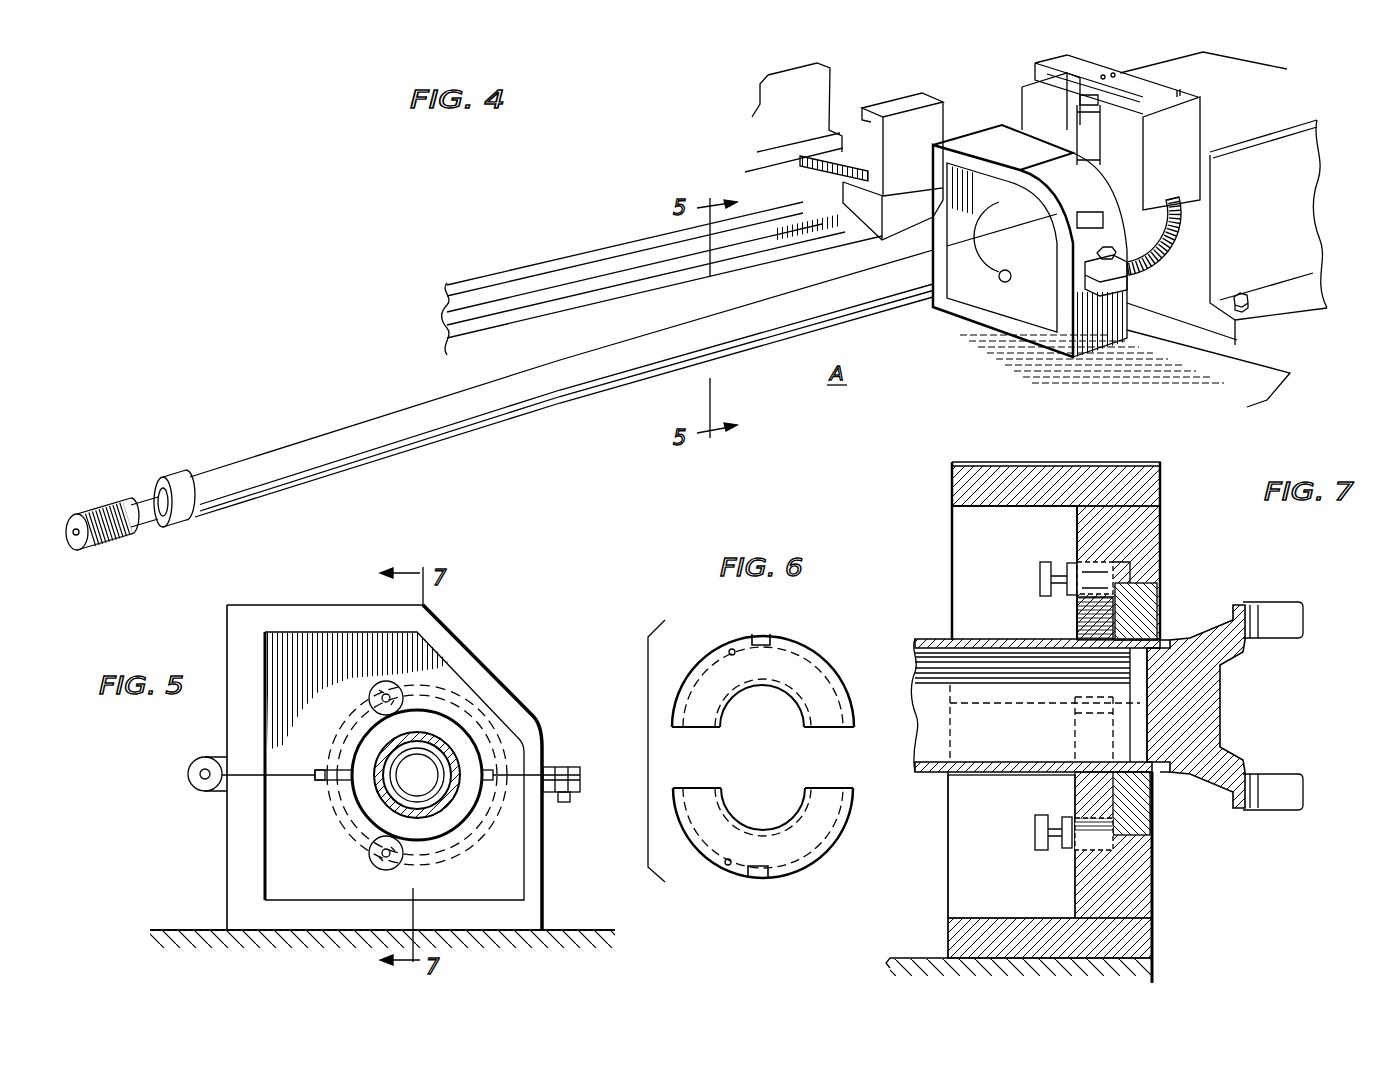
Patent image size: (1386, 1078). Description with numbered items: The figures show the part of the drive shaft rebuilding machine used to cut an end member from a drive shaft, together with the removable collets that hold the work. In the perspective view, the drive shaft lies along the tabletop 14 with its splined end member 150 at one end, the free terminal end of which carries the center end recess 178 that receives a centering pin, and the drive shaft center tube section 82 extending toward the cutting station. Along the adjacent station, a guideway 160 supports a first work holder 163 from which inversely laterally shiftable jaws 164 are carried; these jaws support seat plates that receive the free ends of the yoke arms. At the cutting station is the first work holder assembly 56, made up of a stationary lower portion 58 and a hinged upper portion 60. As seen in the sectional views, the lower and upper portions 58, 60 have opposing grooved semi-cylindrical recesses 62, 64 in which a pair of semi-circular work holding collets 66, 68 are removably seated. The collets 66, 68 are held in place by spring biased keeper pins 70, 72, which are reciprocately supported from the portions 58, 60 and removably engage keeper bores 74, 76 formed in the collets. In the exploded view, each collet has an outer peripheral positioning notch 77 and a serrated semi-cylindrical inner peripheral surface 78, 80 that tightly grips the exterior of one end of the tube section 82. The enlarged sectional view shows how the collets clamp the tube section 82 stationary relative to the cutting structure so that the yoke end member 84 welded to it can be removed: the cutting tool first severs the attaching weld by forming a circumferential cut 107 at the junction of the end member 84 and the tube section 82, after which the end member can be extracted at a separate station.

In FIG. 5, the tabletop 14 is at (565, 929).
In FIG. 7, the tabletop 14 is at (920, 957).
In FIG. 4, the first work holder assembly 56 is at (1037, 334).
In FIG. 4, the stationary lower portion 58 is at (1093, 332).
In FIG. 5, the stationary lower portion 58 is at (532, 846).
In FIG. 4, the hinged upper portion 60 is at (990, 132).
In FIG. 5, the hinged upper portion 60 is at (468, 660).
In FIG. 7, the grooved semi-cylindrical recess 62 is at (1157, 832).
In FIG. 7, the grooved semi-cylindrical recess 64 is at (1153, 580).
In FIG. 5, the work holding collet 66 is at (375, 802).
In FIG. 6, the work holding collet 66 is at (795, 843).
In FIG. 7, the work holding collet 66 is at (1157, 810).
In FIG. 5, the work holding collet 68 is at (365, 758).
In FIG. 6, the work holding collet 68 is at (807, 680).
In FIG. 7, the work holding collet 68 is at (1150, 600).
In FIG. 4, the spring biased keeper pin 70 is at (1003, 282).
In FIG. 5, the spring biased keeper pin 70 is at (380, 862).
In FIG. 7, the spring biased keeper pin 70 is at (1035, 833).
In FIG. 5, the spring biased keeper pin 72 is at (369, 695).
In FIG. 7, the spring biased keeper pin 72 is at (1040, 578).
In FIG. 6, the keeper bore 74 is at (727, 867).
In FIG. 6, the keeper bore 76 is at (729, 650).
In FIG. 6, the outer peripheral positioning notch 77 is at (763, 633).
In FIG. 6, the serrated semi-cylindrical inner peripheral surface 78 is at (763, 807).
In FIG. 6, the serrated semi-cylindrical inner peripheral surface 80 is at (762, 715).
In FIG. 5, the drive shaft center tube section 82 is at (453, 750).
In FIG. 7, the drive shaft center tube section 82 is at (998, 639).
In FIG. 7, the yoke end member 84 is at (1223, 707).
In FIG. 7, the circumferential cut 107 is at (1167, 640).
In FIG. 4, the splined end member 150 is at (145, 506).
In FIG. 4, the guideway 160 is at (585, 278).
In FIG. 4, the first work holder 163 is at (862, 228).
In FIG. 4, the inversely laterally shiftable jaws 164 is at (910, 98).
In FIG. 4, the center end recess 178 is at (78, 540).